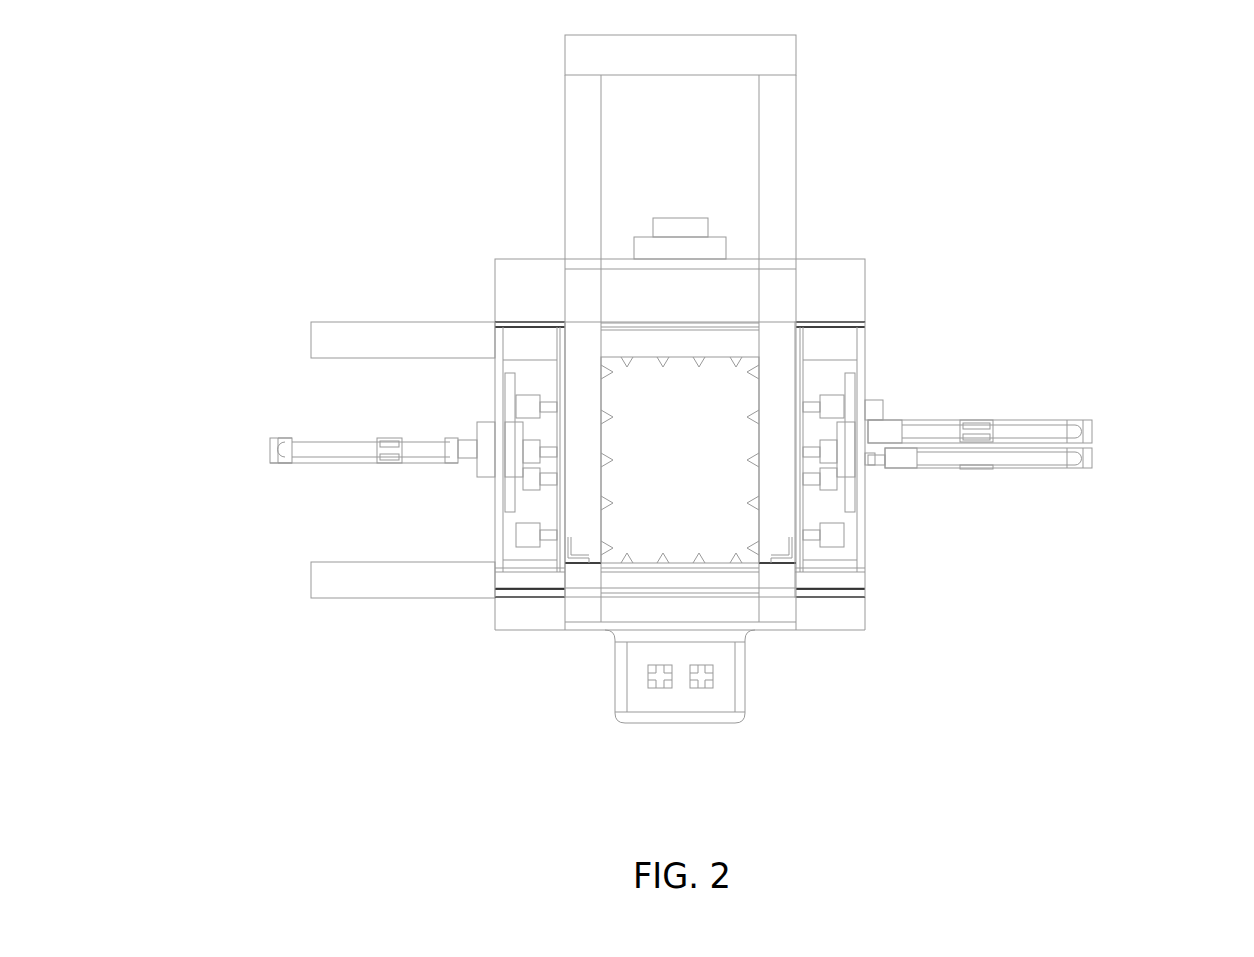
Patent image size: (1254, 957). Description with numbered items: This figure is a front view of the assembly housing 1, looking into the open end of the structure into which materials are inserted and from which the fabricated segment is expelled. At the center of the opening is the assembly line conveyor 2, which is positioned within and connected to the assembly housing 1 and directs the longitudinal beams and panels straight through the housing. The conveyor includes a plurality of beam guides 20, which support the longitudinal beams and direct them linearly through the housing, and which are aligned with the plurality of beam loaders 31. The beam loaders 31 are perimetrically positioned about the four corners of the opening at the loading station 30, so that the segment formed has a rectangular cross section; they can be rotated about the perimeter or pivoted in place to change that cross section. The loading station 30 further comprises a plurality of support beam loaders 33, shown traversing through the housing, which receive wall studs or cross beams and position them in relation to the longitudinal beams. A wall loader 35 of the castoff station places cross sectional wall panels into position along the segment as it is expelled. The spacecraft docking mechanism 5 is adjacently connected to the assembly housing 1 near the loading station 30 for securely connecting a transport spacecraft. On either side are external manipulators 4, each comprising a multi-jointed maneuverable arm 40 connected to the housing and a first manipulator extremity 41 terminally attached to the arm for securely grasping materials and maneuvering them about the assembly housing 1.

The assembly housing 1 is at (1139, 63).
The assembly line conveyor 2 is at (668, 448).
The external manipulator 4 is at (1003, 312).
The spacecraft docking mechanism 5 is at (720, 677).
The beam guide 20 is at (572, 558).
The loading station 30 is at (853, 293).
The beam loader 31 is at (580, 338).
The support beam loader 33 is at (575, 190).
The wall loader 35 is at (675, 225).
The maneuverable arm 40 is at (293, 447).
The first manipulator extremity 41 is at (373, 452).